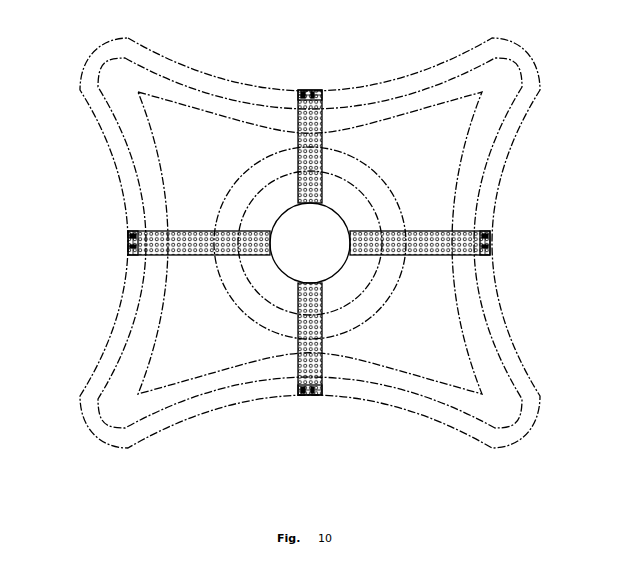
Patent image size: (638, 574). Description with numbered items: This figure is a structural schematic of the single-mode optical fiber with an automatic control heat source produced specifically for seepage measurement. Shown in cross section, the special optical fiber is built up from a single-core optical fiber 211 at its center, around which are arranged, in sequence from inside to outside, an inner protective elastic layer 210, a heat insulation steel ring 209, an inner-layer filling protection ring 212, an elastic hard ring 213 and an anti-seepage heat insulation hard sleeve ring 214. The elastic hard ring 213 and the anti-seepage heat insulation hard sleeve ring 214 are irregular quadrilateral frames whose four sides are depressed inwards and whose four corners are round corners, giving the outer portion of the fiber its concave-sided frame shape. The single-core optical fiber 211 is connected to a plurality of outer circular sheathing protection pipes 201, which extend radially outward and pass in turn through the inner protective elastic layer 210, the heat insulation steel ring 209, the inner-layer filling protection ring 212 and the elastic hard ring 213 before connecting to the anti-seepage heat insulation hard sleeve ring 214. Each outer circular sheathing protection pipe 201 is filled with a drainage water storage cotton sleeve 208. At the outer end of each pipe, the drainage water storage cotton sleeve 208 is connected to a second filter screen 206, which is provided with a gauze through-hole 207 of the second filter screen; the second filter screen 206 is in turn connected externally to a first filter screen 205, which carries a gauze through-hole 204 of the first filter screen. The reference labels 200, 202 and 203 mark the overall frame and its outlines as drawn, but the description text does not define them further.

The outer frame 200 is at (112, 44).
The outer circular sheathing protection pipe 201 is at (298, 118).
The middle frame 202 is at (106, 63).
The inner frame 203 is at (138, 93).
The gauze through-hole of the first filter screen 204 is at (302, 95).
The first filter screen 205 is at (304, 92).
The second filter screen 206 is at (312, 92).
The gauze through-hole of the second filter screen 207 is at (319, 103).
The drainage water storage cotton sleeve 208 is at (320, 116).
The heat insulation steel ring 209 is at (338, 167).
The inner protective elastic layer 210 is at (349, 203).
The single-core optical fiber 211 is at (328, 265).
The inner-layer filling protection ring 212 is at (195, 300).
The elastic hard ring 213 is at (480, 358).
The anti-seepage heat insulation hard sleeve ring 214 is at (123, 342).